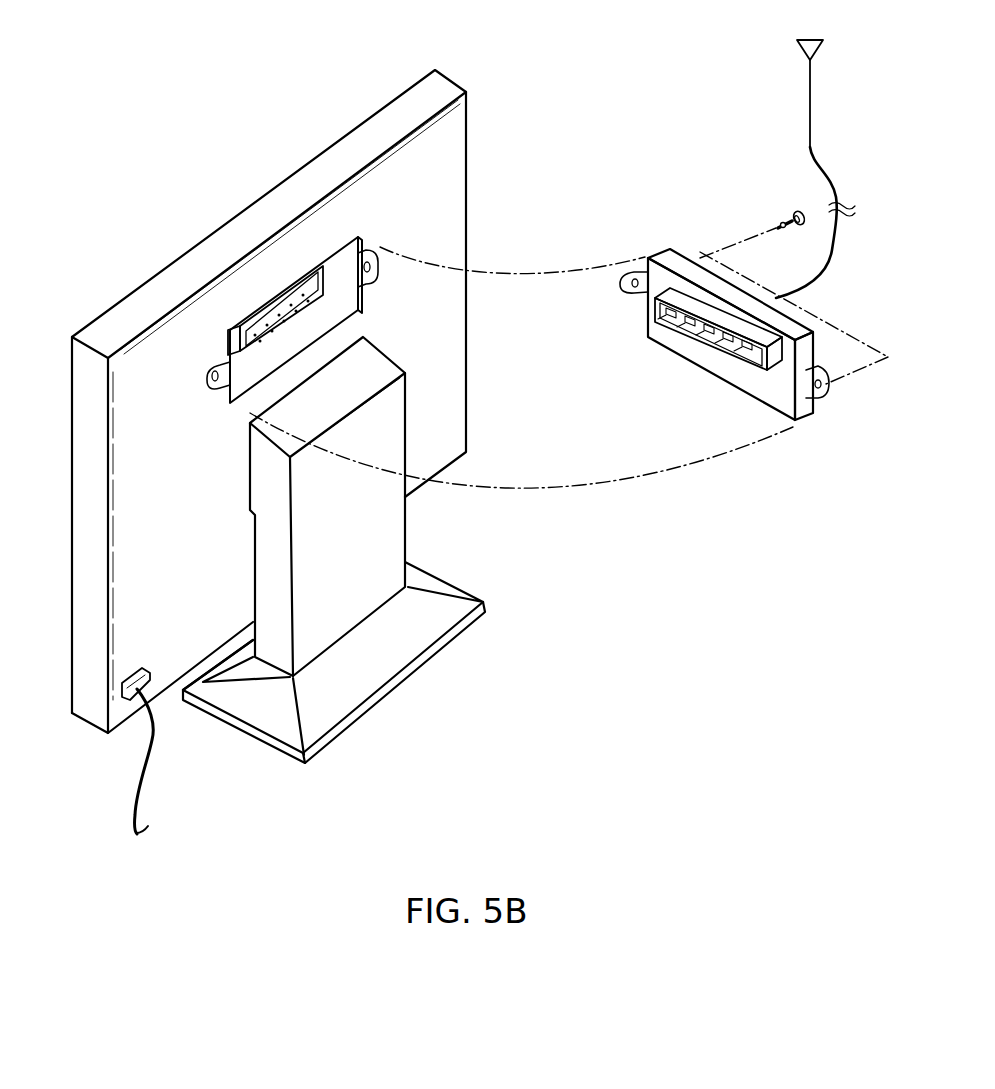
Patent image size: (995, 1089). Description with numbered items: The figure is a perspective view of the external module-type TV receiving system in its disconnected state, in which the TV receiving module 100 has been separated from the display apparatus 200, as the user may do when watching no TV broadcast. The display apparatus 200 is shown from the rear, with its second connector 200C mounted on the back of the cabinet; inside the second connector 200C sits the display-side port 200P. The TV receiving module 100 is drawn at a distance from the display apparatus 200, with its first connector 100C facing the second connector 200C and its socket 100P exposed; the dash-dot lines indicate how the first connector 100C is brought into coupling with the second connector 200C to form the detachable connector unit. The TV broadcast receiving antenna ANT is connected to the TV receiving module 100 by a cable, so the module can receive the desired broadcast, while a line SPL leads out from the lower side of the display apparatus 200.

The display apparatus 200 is at (307, 173).
The display-side connector port 200P is at (288, 292).
The second connector 200C is at (228, 332).
The TV receiving module 100 is at (671, 257).
The module connector socket 100P is at (668, 333).
The first connector 100C is at (776, 398).
The speaker line SPL is at (139, 798).
The TV broadcast receiving antenna ANT is at (815, 155).